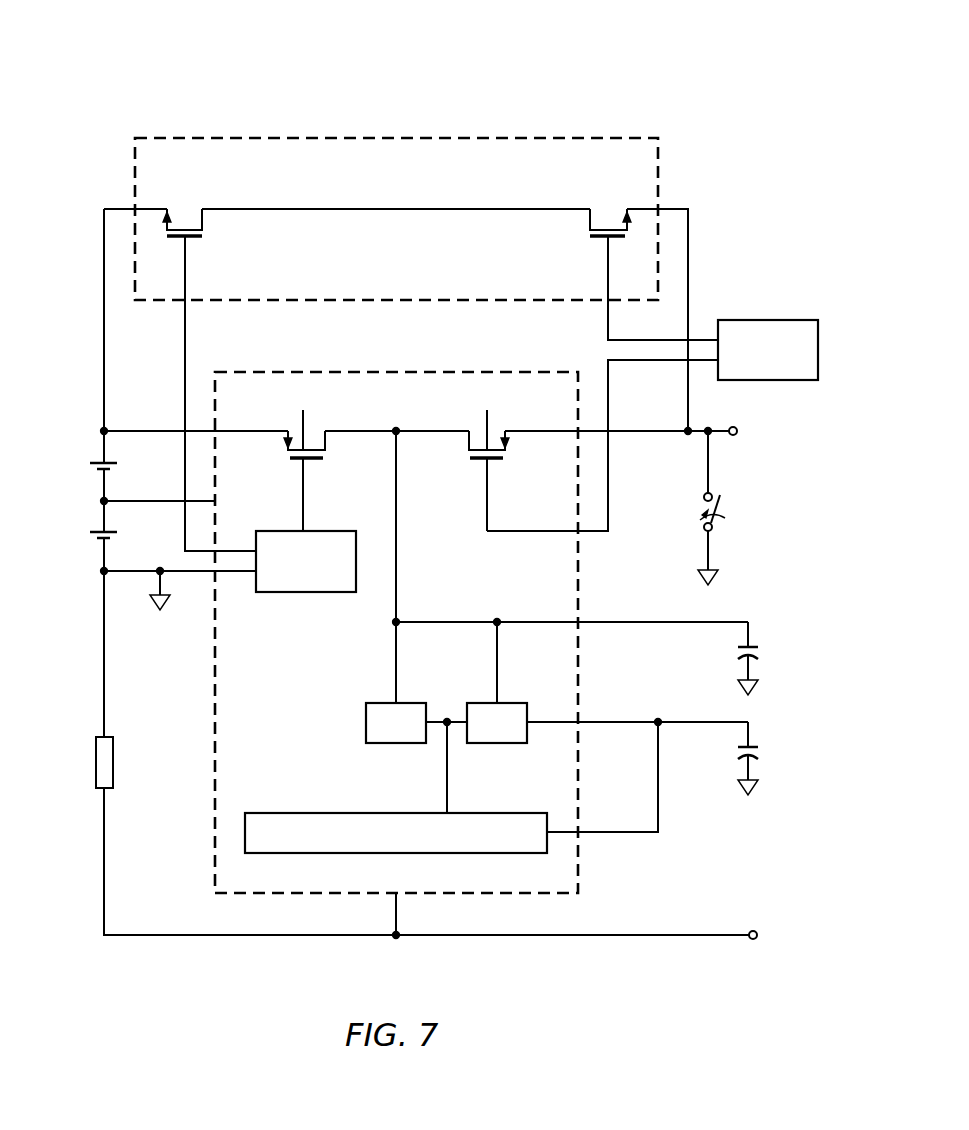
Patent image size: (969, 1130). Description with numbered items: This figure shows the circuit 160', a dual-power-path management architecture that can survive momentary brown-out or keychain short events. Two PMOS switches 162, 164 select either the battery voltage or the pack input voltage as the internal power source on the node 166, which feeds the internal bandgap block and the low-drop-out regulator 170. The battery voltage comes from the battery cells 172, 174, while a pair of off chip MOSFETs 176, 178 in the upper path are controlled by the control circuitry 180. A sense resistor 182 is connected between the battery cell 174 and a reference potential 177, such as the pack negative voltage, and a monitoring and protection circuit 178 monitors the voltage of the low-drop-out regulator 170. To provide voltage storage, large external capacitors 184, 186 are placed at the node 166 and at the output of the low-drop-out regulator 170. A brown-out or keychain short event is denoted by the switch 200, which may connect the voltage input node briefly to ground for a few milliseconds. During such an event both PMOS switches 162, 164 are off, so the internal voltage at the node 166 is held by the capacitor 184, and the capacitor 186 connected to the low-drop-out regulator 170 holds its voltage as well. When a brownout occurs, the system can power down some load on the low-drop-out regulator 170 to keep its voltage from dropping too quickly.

The circuit 160' is at (423, 506).
The off chip MOSFET 176 is at (198, 240).
The off chip MOSFET 178 is at (596, 240).
The PMOS switch 162 is at (296, 462).
The PMOS switch 164 is at (478, 462).
The node 166 is at (404, 437).
The low-drop-out regulator 170 is at (502, 744).
The battery cell 172 is at (80, 468).
The battery cell 174 is at (80, 536).
The control circuitry 180 is at (300, 594).
The sense resistor 182 is at (94, 762).
The capacitor 184 is at (734, 654).
The capacitor 186 is at (734, 754).
The reference potential 177 is at (392, 940).
The switch 200 is at (700, 520).